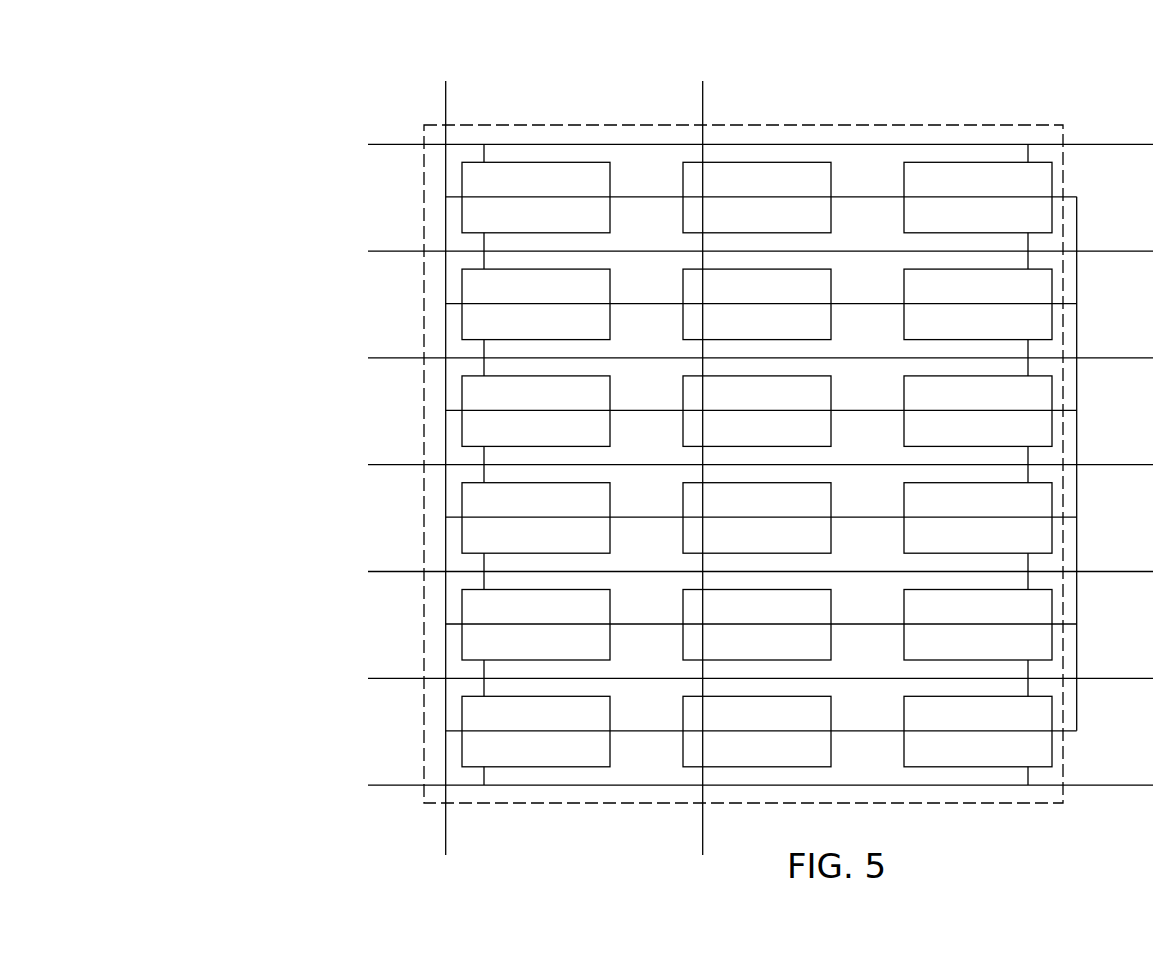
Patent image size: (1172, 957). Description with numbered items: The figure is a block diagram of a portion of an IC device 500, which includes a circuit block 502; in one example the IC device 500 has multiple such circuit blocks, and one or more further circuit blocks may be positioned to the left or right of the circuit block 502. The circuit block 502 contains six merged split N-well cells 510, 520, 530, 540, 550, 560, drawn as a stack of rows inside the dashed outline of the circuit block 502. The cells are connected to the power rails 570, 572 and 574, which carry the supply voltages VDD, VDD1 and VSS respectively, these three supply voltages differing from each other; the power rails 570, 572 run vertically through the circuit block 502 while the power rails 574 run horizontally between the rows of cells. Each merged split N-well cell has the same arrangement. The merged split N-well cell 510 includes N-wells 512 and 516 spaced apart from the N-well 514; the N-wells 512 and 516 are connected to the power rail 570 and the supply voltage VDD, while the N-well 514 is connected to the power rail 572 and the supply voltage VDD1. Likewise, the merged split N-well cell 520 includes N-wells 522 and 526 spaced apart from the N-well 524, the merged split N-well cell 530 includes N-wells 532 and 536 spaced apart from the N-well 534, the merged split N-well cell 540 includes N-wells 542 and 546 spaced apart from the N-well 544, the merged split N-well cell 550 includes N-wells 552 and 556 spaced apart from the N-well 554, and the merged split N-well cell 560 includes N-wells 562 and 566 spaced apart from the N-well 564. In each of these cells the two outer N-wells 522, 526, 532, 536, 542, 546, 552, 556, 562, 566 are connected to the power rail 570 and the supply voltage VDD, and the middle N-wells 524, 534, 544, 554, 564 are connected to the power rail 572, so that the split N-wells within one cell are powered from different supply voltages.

The IC device 500 is at (243, 81).
The circuit block 502 is at (605, 123).
The merged split N-well cell 510 is at (1048, 152).
The merged split N-well cell 520 is at (1048, 259).
The merged split N-well cell 530 is at (1048, 366).
The merged split N-well cell 540 is at (1048, 473).
The merged split N-well cell 550 is at (1048, 580).
The merged split N-well cell 560 is at (1048, 686).
The N-well 512 is at (517, 190).
The N-well 514 is at (812, 190).
The N-well 516 is at (1028, 190).
The N-well 522 is at (517, 297).
The N-well 524 is at (812, 297).
The N-well 526 is at (1028, 297).
The N-well 532 is at (517, 404).
The N-well 534 is at (812, 404).
The N-well 536 is at (1028, 404).
The N-well 542 is at (517, 511).
The N-well 544 is at (812, 511).
The N-well 546 is at (1028, 511).
The N-well 552 is at (517, 618).
The N-well 554 is at (812, 618).
The N-well 556 is at (1028, 618).
The N-well 562 is at (517, 724).
The N-well 564 is at (812, 724).
The N-well 566 is at (1028, 724).
The power rail 570 is at (446, 100).
The power rail 572 is at (703, 100).
The power rail 574 is at (368, 144).